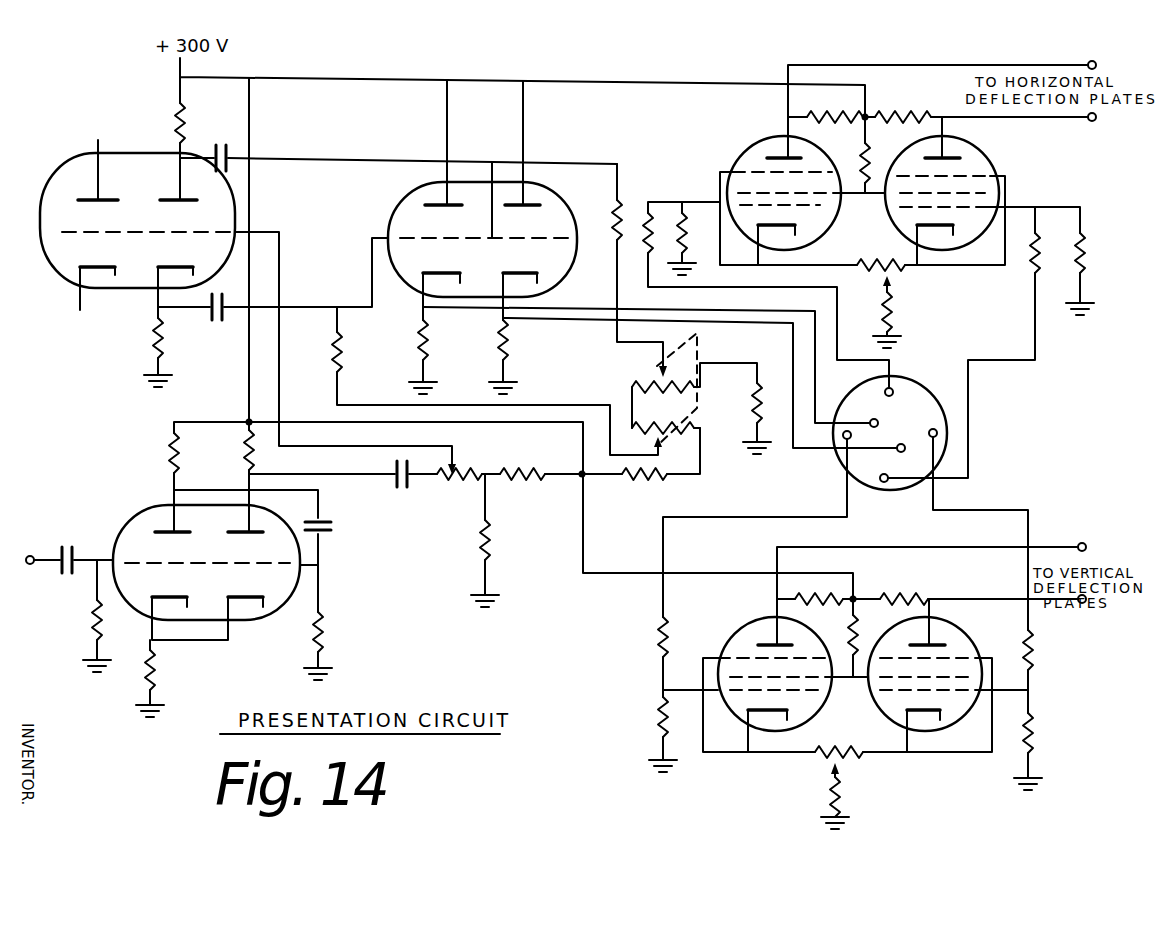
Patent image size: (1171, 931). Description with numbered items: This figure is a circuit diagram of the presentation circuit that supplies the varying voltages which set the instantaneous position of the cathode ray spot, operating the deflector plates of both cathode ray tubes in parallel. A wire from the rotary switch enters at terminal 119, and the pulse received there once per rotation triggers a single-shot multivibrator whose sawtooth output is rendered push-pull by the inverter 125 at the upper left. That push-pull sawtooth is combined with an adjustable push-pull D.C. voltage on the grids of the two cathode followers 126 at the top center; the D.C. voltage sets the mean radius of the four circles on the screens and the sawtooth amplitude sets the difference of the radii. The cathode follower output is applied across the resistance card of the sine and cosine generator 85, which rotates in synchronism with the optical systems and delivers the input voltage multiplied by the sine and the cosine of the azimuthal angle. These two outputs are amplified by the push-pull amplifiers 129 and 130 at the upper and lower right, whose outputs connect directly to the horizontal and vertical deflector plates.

The inverter 125 is at (200, 216).
The cathode followers 126 is at (535, 222).
The push-pull amplifier 129 is at (886, 138).
The push-pull amplifier 130 is at (826, 714).
The sine and cosine generator 85 is at (873, 463).
The terminal 119 is at (44, 538).